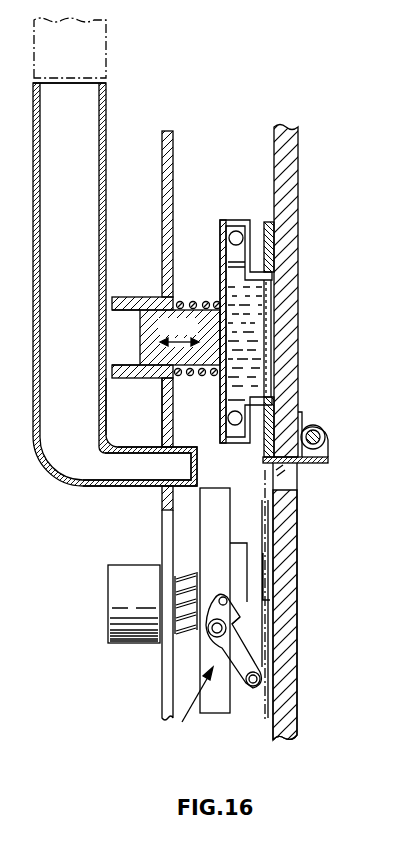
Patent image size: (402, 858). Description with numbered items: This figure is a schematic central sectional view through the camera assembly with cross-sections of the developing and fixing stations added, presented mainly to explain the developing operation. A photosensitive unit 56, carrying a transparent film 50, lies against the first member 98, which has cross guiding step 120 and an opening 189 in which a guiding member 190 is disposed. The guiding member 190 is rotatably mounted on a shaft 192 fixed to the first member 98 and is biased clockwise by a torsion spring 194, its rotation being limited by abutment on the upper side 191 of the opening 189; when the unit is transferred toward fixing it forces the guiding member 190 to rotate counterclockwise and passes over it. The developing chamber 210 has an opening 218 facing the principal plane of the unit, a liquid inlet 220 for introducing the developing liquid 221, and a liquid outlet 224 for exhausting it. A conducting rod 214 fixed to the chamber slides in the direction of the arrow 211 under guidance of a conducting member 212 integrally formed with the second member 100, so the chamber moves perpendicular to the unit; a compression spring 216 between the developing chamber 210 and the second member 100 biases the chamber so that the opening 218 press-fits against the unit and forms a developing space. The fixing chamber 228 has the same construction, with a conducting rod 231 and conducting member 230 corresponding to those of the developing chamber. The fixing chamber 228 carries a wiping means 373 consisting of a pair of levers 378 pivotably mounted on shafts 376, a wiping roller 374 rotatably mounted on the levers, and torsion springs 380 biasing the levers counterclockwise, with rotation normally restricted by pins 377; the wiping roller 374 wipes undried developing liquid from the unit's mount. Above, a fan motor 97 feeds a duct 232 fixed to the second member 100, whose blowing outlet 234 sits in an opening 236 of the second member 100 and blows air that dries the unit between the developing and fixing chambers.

The fan motor 97 is at (109, 67).
The first member 98 is at (300, 185).
The second member 100 is at (165, 178).
The cross guiding step 120 is at (270, 218).
The photosensitive unit 56 is at (265, 233).
The liquid inlet 220 is at (233, 229).
The developing chamber 210 is at (221, 274).
The conducting member 212 is at (137, 302).
The duct 232 is at (90, 308).
The conducting rod 214 is at (140, 331).
The arrow 211 is at (180, 337).
The opening 218 is at (262, 322).
The transparent film 50 is at (262, 340).
The developing liquid 221 is at (250, 361).
The compression spring 216 is at (170, 389).
The opening 236 is at (160, 437).
The liquid outlet 224 is at (227, 417).
The torsion spring 194 is at (302, 420).
The shaft 192 is at (326, 432).
The blowing outlet 234 is at (190, 471).
The guiding member 190 is at (264, 461).
The upper side 191 is at (294, 466).
The opening 189 is at (287, 488).
The torsion springs 380 is at (228, 598).
The pins 377 is at (233, 601).
The shafts 376 is at (226, 627).
The levers 378 is at (238, 652).
The wiping roller 374 is at (260, 680).
The conducting member 230 is at (136, 620).
The conducting rod 231 is at (173, 640).
The wiping means 373 is at (185, 709).
The fixing chamber 228 is at (218, 700).